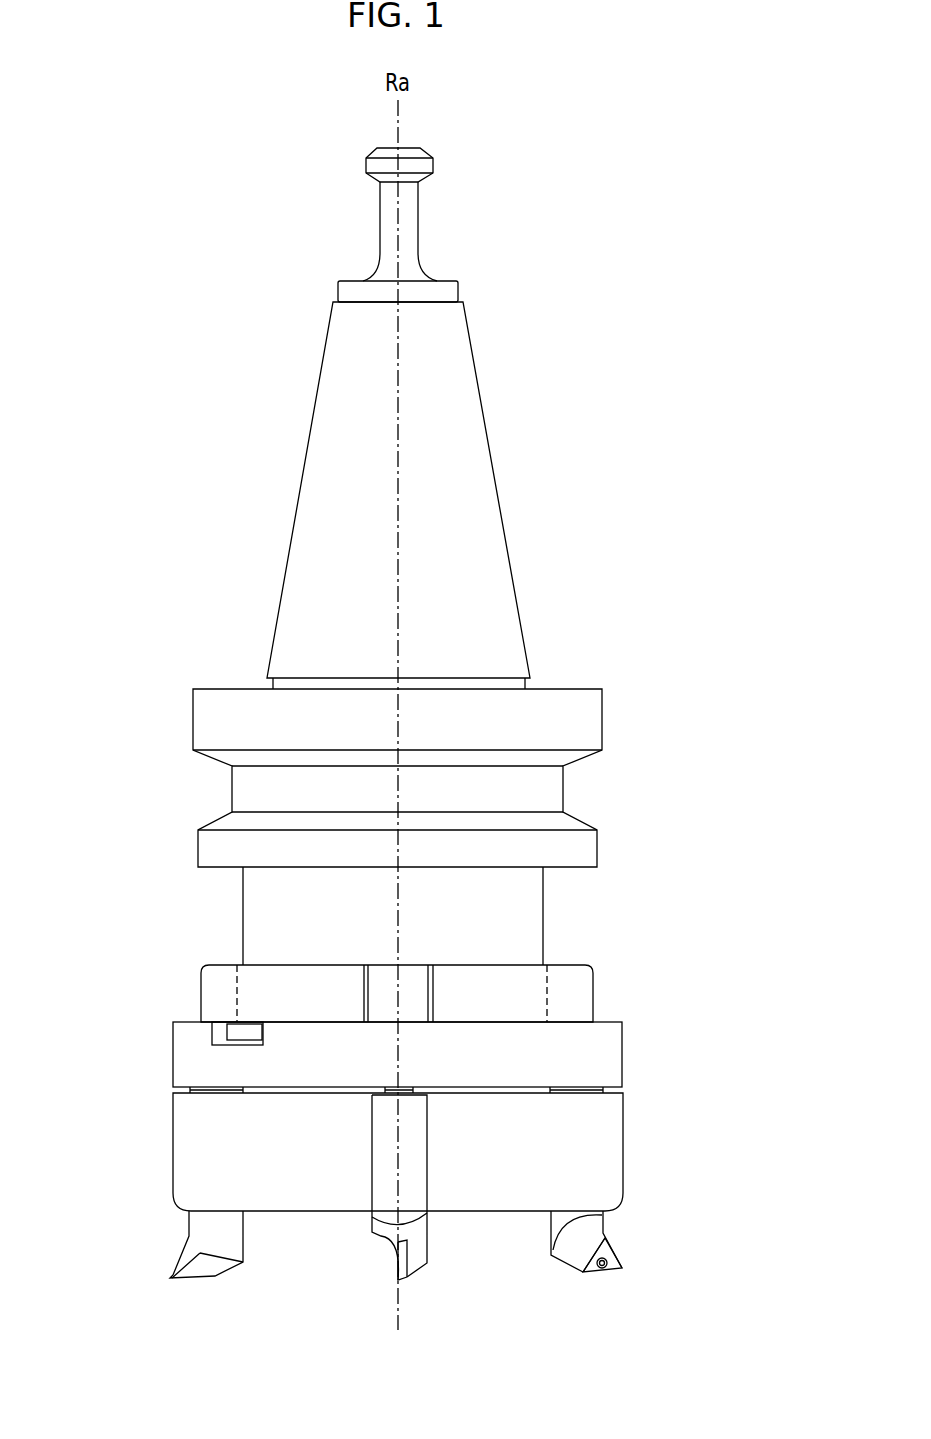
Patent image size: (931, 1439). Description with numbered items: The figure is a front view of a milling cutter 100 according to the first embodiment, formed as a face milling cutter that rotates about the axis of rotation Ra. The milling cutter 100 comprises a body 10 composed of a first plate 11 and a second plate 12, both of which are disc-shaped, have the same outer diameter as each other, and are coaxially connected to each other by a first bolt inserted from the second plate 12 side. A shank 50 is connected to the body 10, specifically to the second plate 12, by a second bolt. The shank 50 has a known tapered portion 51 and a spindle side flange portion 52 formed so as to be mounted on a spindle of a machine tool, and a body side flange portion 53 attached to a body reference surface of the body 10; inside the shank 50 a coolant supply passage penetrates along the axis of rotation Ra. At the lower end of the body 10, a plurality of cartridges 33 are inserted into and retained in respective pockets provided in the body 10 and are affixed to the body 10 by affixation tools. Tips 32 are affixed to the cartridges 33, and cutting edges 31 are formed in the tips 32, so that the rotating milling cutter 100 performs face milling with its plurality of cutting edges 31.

The milling cutter 100 is at (247, 568).
The shank 50 is at (552, 568).
The tapered portion 51 is at (480, 397).
The spindle side flange portion 52 is at (602, 723).
The body side flange portion 53 is at (593, 985).
The body 10 is at (723, 1027).
The second plate 12 is at (622, 1058).
The first plate 11 is at (623, 1122).
The cartridge 33 is at (178, 1250).
The cutting edge 31 is at (622, 1272).
The tip 32 is at (583, 1275).